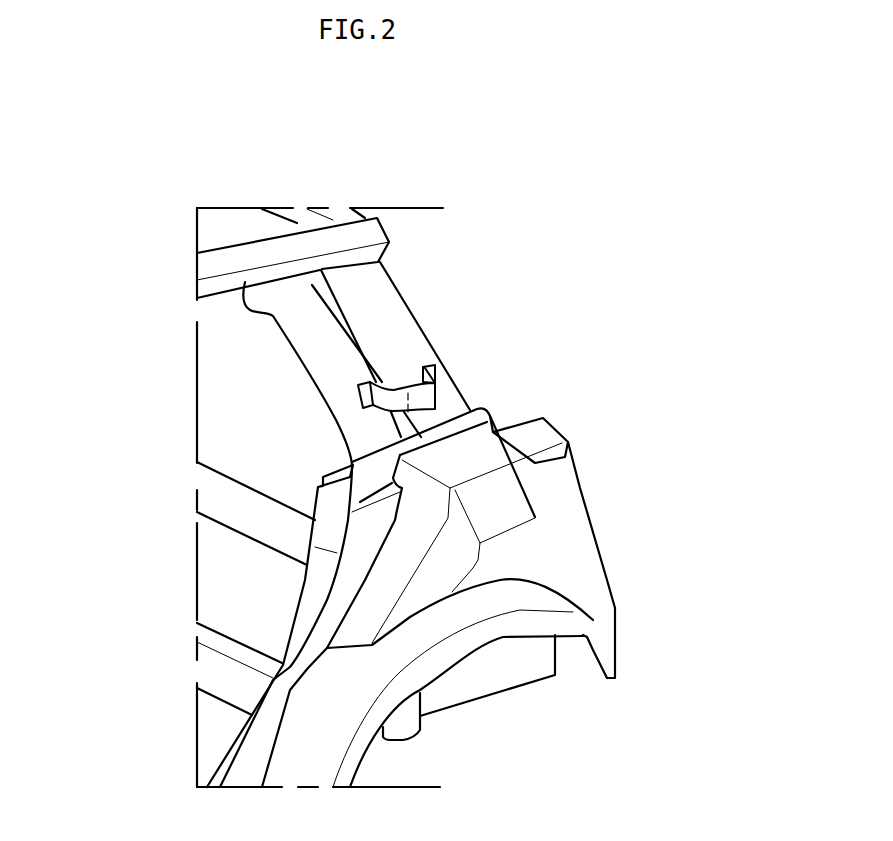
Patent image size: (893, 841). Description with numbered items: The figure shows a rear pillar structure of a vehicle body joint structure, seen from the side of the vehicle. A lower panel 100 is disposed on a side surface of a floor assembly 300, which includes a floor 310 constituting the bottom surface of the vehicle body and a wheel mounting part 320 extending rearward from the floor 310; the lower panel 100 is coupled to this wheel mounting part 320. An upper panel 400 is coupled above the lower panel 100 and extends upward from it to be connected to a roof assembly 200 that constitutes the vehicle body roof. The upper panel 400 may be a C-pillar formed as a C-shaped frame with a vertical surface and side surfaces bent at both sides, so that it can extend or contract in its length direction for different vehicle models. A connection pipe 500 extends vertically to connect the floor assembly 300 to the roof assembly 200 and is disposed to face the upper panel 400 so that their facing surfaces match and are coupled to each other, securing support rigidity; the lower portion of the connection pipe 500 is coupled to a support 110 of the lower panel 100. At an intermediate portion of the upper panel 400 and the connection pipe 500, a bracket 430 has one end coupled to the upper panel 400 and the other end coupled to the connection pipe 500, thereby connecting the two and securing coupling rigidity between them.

The lower panel 100 is at (512, 550).
The support 110 is at (490, 413).
The roof assembly 200 is at (337, 238).
The floor assembly 300 is at (187, 571).
The floor 310 is at (217, 670).
The wheel mounting part 320 is at (512, 670).
The upper panel 400 is at (315, 343).
The bracket 430 is at (428, 395).
The connection pipe 500 is at (398, 317).